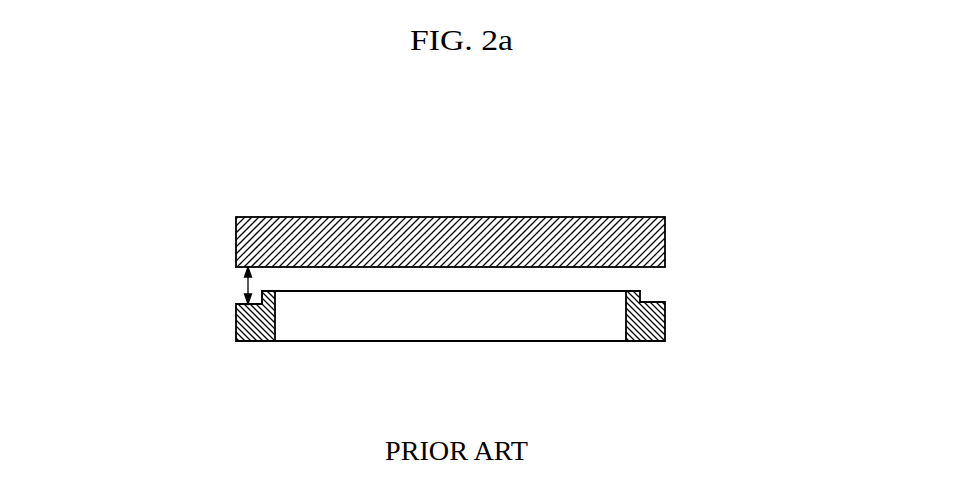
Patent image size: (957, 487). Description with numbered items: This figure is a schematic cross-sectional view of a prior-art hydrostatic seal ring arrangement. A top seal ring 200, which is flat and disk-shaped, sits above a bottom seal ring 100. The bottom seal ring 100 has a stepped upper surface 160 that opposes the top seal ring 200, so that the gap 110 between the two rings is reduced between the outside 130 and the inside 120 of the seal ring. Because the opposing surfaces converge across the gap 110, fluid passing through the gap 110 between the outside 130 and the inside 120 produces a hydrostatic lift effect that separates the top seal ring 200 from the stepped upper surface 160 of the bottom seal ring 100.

The top seal ring 200 is at (240, 242).
The bottom seal ring 100 is at (647, 315).
The outside 130 is at (230, 331).
The inside 120 is at (282, 334).
The stepped upper surface 160 is at (660, 297).
The gap 110 is at (226, 287).